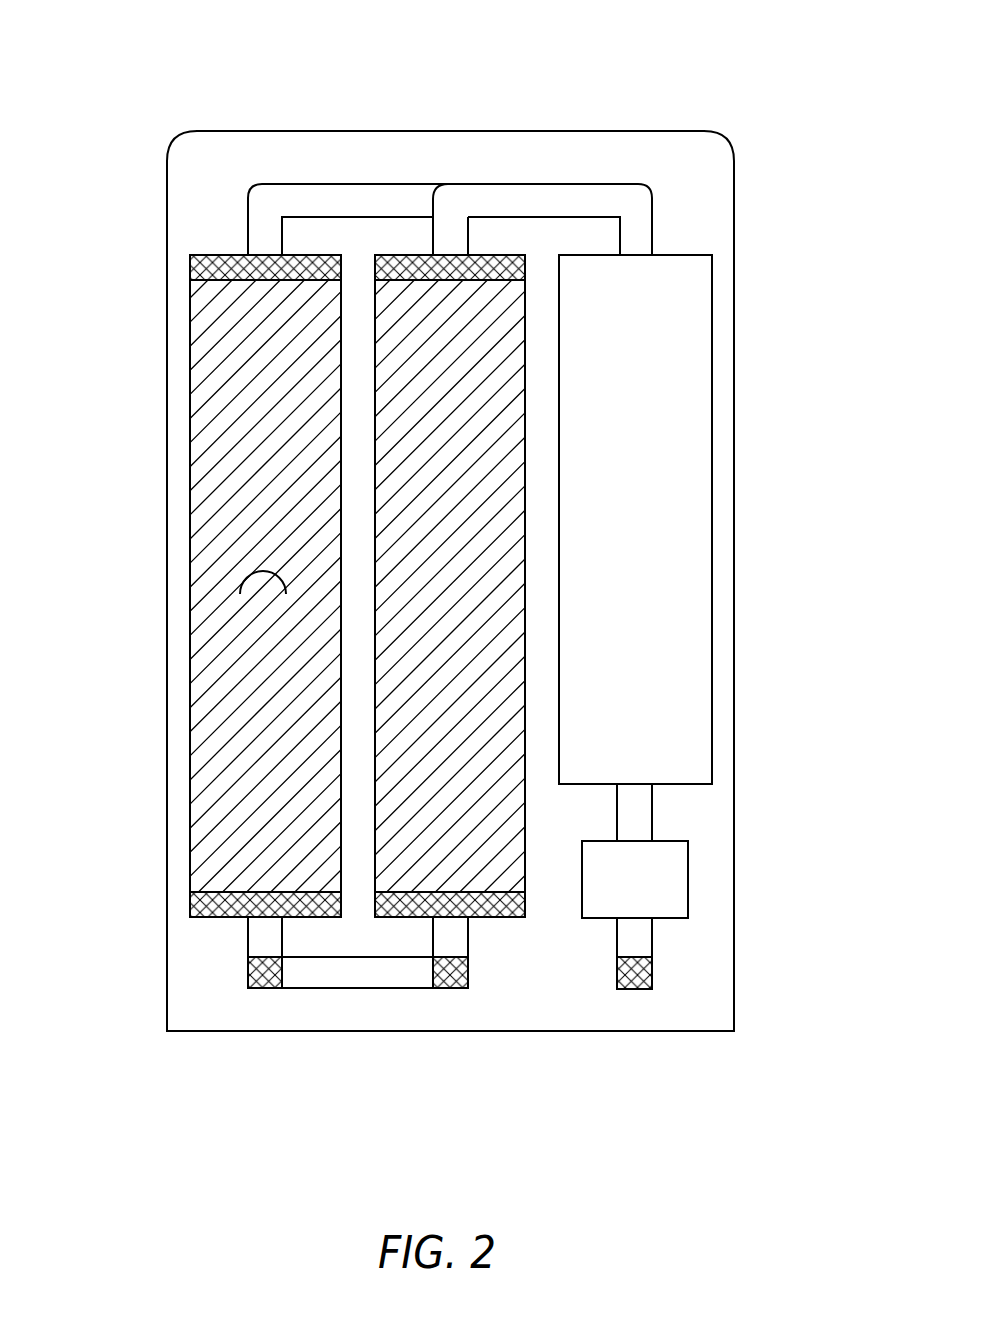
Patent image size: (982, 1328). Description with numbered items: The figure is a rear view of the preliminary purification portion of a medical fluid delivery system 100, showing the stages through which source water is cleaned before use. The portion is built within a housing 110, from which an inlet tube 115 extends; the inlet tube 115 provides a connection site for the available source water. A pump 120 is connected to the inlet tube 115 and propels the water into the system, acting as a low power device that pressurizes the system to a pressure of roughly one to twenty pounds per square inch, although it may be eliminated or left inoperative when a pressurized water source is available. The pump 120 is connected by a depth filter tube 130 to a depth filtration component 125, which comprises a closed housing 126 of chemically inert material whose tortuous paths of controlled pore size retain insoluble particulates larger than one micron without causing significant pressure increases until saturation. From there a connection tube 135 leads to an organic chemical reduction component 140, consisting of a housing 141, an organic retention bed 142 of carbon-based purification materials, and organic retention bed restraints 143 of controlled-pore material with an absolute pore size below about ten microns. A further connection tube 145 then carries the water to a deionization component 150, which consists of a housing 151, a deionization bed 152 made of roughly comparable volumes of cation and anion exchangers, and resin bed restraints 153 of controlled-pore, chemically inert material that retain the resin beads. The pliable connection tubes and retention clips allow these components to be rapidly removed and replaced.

The system 100 is at (232, 85).
The housing 110 is at (541, 131).
The inlet tube 115 is at (632, 989).
The pump 120 is at (640, 887).
The depth filtration component 125 is at (640, 826).
The closed housing 126 is at (713, 348).
The depth filter tube 130 is at (691, 272).
The connection tube 135 is at (622, 203).
The organic chemical reduction component 140 is at (453, 253).
The housing 141 is at (373, 354).
The organic retention bed 142 is at (405, 305).
The organic retention bed restraints 143 is at (492, 253).
The connection tube 145 is at (353, 975).
The deionization component 150 is at (303, 195).
The housing 151 is at (190, 488).
The deionization bed 152 is at (247, 410).
The resin bed restraints 153 is at (210, 266).